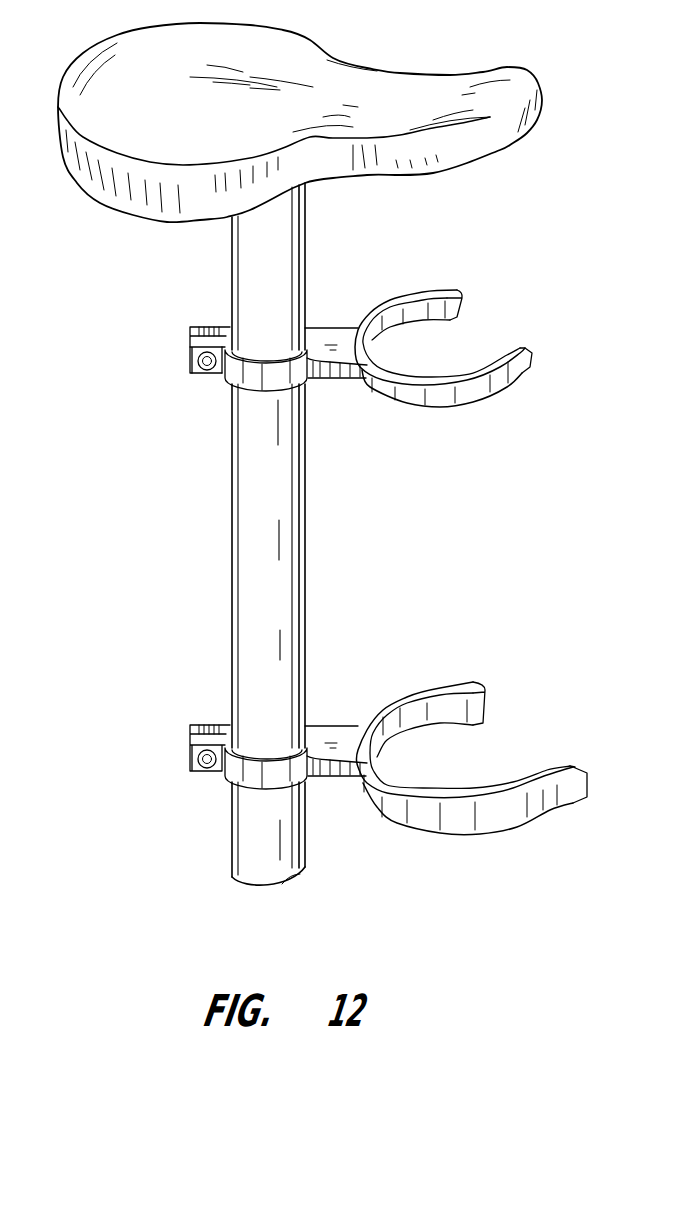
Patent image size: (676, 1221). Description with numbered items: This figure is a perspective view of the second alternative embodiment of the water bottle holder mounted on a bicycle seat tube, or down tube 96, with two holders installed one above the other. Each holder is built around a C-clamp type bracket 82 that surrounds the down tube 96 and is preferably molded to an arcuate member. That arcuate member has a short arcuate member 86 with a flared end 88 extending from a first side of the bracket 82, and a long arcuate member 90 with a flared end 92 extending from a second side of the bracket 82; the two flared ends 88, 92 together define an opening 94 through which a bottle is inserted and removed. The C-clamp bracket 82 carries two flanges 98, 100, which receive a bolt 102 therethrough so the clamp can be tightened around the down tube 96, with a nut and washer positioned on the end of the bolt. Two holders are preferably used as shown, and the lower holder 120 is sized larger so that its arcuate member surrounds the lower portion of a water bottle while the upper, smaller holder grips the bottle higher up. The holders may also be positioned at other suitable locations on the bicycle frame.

The C-clamp type bracket 82 is at (238, 376).
The short arcuate member 86 is at (390, 317).
The flared end 88 is at (457, 287).
The long arcuate member 90 is at (437, 406).
The flared end 92 is at (531, 350).
The opening 94 is at (470, 328).
The down tube 96 is at (232, 585).
The flange 98 is at (192, 330).
The flange 100 is at (190, 347).
The bolt 102 is at (197, 372).
The holder 120 is at (413, 687).